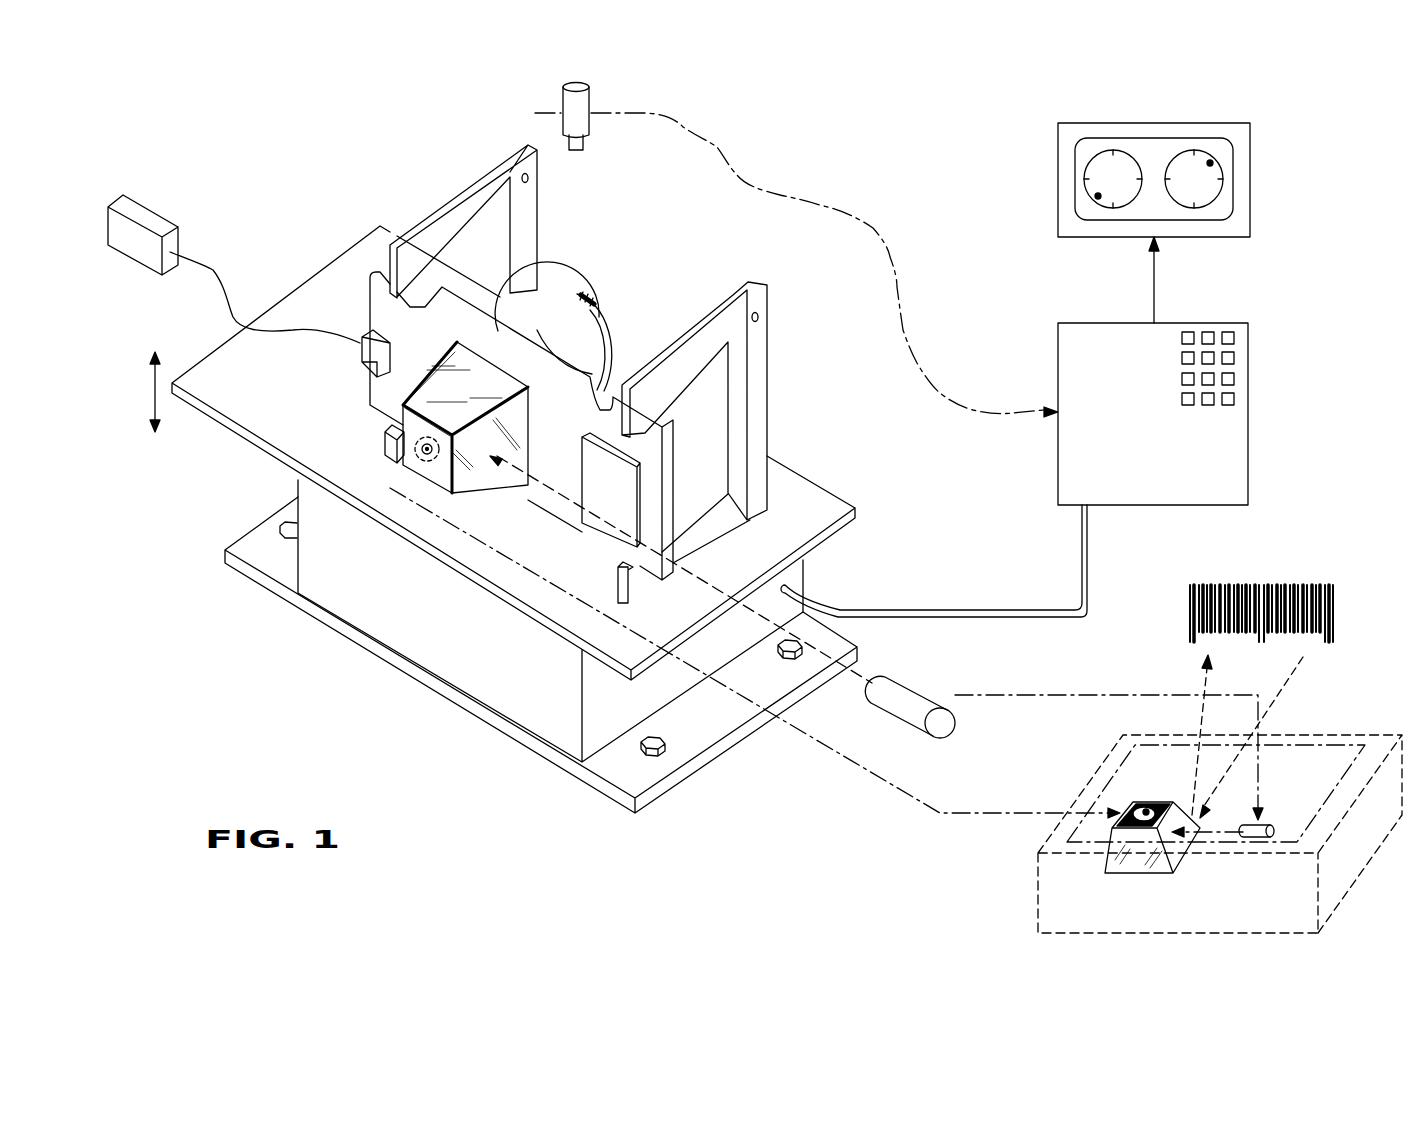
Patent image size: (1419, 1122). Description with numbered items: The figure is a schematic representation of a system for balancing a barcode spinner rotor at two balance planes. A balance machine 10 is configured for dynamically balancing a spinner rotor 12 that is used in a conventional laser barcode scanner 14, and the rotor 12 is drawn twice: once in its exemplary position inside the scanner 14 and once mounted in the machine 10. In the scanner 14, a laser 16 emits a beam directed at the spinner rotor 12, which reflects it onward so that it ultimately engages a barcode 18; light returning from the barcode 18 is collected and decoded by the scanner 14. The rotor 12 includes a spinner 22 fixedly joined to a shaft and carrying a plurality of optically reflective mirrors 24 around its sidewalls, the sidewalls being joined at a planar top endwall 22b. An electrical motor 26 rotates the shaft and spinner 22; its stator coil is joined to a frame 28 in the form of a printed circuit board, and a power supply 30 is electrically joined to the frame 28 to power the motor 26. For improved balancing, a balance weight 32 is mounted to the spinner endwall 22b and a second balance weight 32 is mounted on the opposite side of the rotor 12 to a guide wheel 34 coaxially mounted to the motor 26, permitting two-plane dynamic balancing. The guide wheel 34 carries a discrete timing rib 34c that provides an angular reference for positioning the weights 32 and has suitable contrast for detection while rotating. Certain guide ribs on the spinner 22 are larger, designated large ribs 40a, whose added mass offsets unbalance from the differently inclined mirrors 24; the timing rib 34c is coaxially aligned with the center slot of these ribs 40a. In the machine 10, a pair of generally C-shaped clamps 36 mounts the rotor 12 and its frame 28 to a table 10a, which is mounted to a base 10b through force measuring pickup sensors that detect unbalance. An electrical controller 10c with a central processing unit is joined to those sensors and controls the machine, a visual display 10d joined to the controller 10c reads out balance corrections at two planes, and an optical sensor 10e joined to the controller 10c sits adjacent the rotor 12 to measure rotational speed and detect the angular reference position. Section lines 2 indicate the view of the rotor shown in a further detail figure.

The section line of FIG. 2 is at (358, 190).
The balance machine 10 is at (392, 682).
The table 10a is at (246, 440).
The base 10b is at (292, 563).
The electrical controller 10c is at (1203, 323).
The visual display 10d is at (1252, 179).
The optical sensor 10e is at (777, 250).
The spinner rotor 12 is at (326, 387).
The laser barcode scanner 14 is at (1030, 884).
The laser 16 is at (945, 730).
The barcode 18 is at (1325, 585).
The spinner 22 is at (490, 500).
The top endwall 22b is at (410, 421).
The reflective mirrors 24 is at (460, 355).
The electrical motor 26 is at (541, 285).
The frame 28 is at (382, 307).
The power supply 30 is at (110, 205).
The balance weight 32 is at (396, 445).
The guide wheel 34 is at (612, 325).
The timing rib 34c is at (578, 296).
The C-shaped clamps 36 is at (487, 180).
The large guide ribs 40a is at (453, 443).